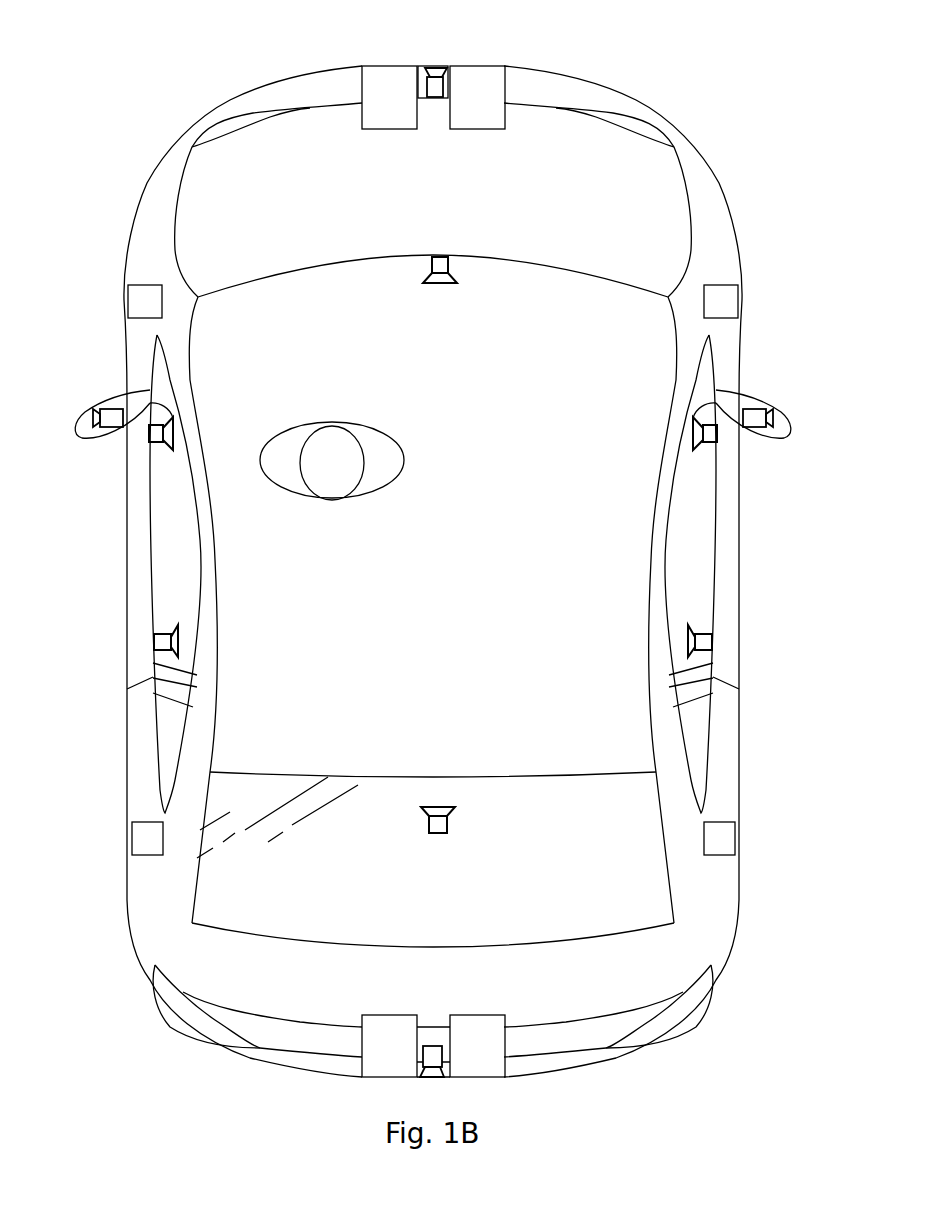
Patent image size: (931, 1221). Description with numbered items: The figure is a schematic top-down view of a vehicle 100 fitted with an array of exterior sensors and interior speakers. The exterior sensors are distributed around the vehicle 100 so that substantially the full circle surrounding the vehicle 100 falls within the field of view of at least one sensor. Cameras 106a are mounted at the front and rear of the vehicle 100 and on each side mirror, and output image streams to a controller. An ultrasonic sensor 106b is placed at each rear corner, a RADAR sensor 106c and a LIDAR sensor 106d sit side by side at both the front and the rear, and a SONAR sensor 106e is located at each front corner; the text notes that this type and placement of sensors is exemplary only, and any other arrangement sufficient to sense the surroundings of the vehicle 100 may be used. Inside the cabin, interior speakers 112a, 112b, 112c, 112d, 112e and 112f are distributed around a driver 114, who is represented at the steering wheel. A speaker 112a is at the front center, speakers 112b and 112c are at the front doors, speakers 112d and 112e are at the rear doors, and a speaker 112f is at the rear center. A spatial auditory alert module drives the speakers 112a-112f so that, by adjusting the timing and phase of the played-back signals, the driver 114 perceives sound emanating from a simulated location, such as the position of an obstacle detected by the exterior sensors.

The vehicle 100 is at (452, 204).
The camera 106a is at (432, 93).
The ultrasonic sensor 106b is at (135, 843).
The RADAR sensor 106c is at (390, 122).
The LIDAR sensor 106d is at (493, 123).
The SONAR sensor 106e is at (135, 300).
The interior speaker 112a is at (442, 284).
The interior speaker 112b is at (155, 440).
The interior speaker 112c is at (711, 440).
The interior speaker 112d is at (160, 633).
The interior speaker 112e is at (706, 633).
The interior speaker 112f is at (438, 835).
The driver 114 is at (387, 462).